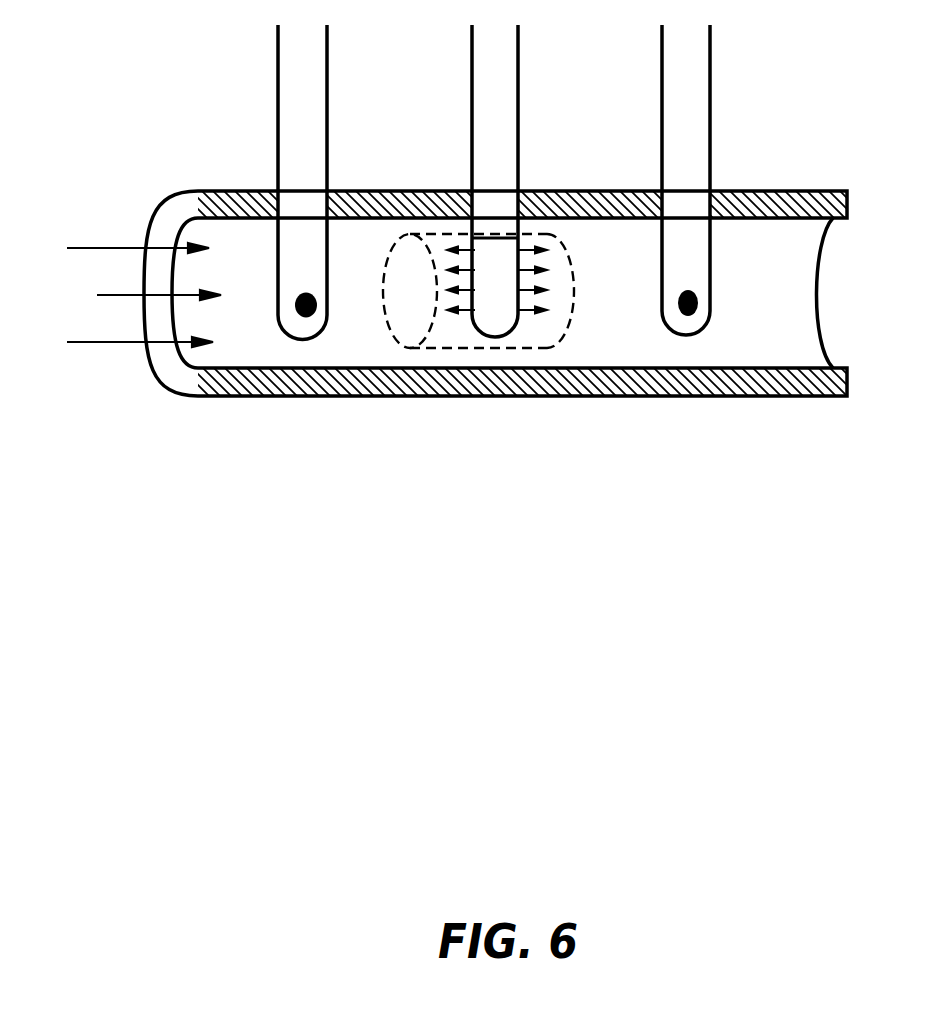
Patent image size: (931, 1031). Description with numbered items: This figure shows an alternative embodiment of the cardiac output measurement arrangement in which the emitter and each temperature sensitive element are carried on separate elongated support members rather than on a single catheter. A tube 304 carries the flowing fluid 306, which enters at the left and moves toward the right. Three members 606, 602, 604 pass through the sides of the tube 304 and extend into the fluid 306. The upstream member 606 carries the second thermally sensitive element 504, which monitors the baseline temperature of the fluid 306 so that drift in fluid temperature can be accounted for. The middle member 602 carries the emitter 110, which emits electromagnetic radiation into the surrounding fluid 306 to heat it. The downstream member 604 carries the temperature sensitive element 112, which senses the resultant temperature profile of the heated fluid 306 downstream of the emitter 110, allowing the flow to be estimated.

The tube 304 is at (247, 191).
The fluid 306 is at (92, 248).
The member 606 is at (312, 152).
The member 602 is at (505, 150).
The member 604 is at (695, 150).
The second thermally sensitive element 504 is at (305, 320).
The emitter 110 is at (487, 337).
The temperature sensor 112 is at (688, 318).